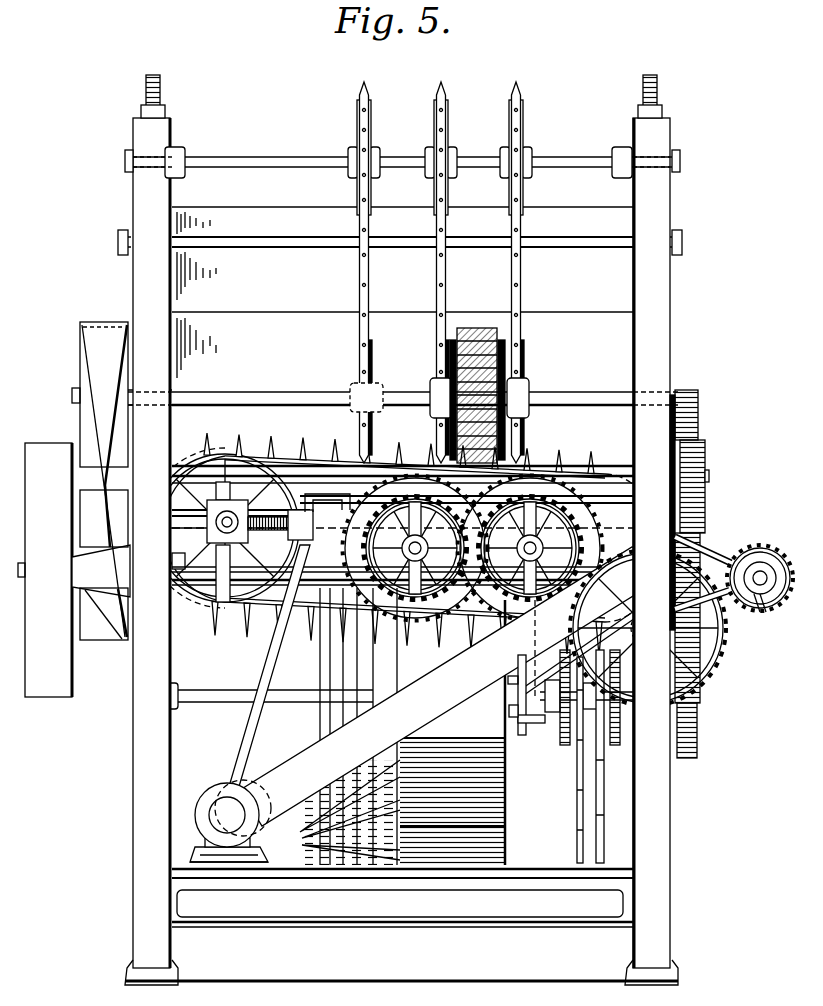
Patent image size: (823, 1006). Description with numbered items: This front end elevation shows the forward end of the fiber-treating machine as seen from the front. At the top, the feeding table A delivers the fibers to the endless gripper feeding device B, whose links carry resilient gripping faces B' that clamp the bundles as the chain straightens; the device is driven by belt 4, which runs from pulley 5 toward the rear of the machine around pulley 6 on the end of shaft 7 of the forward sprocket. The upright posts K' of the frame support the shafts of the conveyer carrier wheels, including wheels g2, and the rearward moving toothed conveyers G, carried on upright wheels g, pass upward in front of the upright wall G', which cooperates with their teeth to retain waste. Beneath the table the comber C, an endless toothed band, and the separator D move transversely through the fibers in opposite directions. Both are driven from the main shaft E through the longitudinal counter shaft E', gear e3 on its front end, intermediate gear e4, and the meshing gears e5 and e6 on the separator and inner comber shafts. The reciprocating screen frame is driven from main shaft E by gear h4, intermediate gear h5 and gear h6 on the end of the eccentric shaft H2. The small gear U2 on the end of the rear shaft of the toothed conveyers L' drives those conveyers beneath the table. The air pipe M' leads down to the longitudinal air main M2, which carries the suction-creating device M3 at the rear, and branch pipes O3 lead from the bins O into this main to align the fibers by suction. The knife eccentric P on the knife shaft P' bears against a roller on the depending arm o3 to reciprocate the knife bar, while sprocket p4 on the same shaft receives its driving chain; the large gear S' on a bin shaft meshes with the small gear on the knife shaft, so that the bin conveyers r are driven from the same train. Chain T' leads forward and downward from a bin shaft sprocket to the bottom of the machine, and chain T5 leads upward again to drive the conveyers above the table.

The upright post K' is at (401, 530).
The conveyer carrier wheel g2 is at (512, 132).
The toothed conveyer G is at (400, 201).
The upright wall G' is at (402, 295).
The gripper feeding device B is at (479, 375).
The gripping face B' is at (516, 364).
The conveyer wheel g is at (437, 355).
The shaft 7 is at (265, 403).
The belt 4 is at (88, 334).
The pulley 6 is at (86, 428).
The pulley 5 is at (82, 612).
The comber C is at (275, 465).
The small gear U2 is at (183, 593).
The separator D is at (566, 484).
The feeding table A is at (574, 471).
The gear e6 is at (418, 616).
The gear e5 is at (503, 608).
The bin O is at (392, 732).
The knife shaft P' is at (270, 683).
The toothed conveyer L' is at (292, 667).
The air pipe M' is at (448, 686).
The air conduit M2 is at (220, 820).
The branch pipe O3 is at (248, 740).
The suction device M3 is at (222, 790).
The conveyer r is at (587, 656).
The eccentric P is at (529, 683).
The depending arm o3 is at (513, 718).
The sprocket p4 is at (566, 746).
The chain T5 is at (577, 820).
The chain T' is at (610, 756).
The intermediate gear e4 is at (727, 658).
The gear h6 is at (702, 466).
The eccentric shaft H2 is at (710, 481).
The intermediate gear h5 is at (705, 528).
The gear h4 is at (710, 560).
The large gear S' is at (706, 732).
The main shaft E is at (760, 568).
The counter shaft E' is at (759, 605).
The gear e3 is at (767, 618).